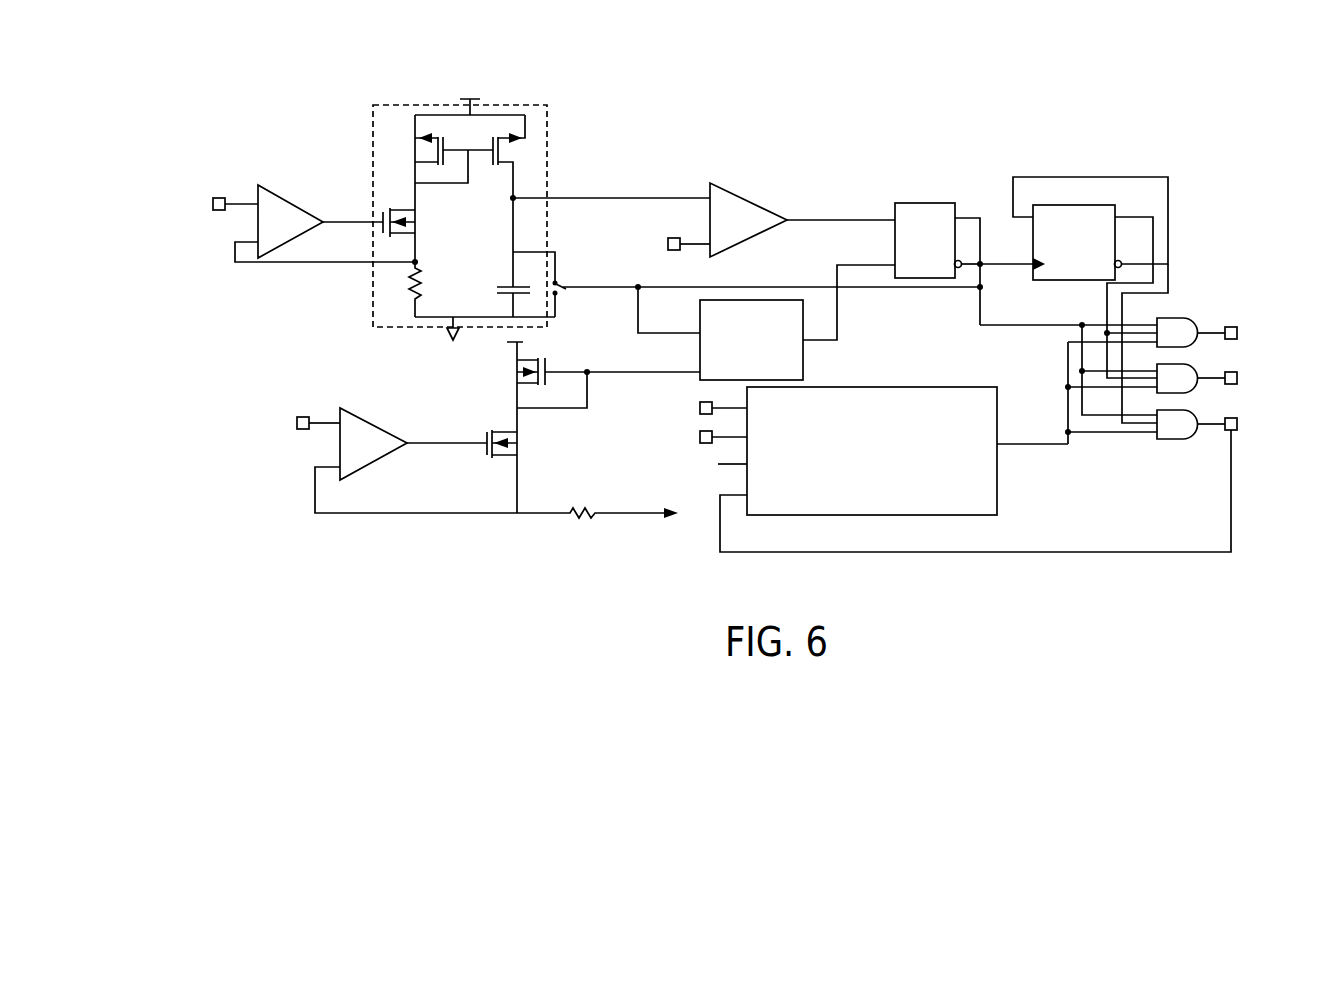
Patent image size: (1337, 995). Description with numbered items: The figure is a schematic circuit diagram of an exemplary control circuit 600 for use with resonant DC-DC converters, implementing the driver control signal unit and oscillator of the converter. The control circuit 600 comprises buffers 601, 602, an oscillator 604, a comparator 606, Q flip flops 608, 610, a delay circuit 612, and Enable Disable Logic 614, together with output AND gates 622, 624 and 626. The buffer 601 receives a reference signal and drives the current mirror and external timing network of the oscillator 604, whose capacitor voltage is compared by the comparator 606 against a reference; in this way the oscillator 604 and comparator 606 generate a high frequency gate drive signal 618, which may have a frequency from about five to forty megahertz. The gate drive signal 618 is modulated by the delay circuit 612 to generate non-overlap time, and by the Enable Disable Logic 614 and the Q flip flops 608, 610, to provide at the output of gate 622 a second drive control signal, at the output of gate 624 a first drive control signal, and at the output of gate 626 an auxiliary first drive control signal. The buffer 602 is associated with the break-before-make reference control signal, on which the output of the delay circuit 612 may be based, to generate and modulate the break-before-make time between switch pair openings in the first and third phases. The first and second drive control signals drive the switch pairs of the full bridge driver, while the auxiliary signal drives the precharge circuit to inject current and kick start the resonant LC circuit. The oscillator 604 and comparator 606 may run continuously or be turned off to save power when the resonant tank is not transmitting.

The control circuit 600 is at (1185, 95).
The buffer 601 is at (300, 203).
The buffer 602 is at (397, 433).
The oscillator 604 is at (521, 103).
The comparator 606 is at (743, 193).
The Q flip flop 608 is at (927, 202).
The Q flip flop 610 is at (1078, 202).
The delay circuit 612 is at (782, 298).
The Enable Disable Logic 614 is at (945, 386).
The gate drive signal 618 is at (833, 215).
The output AND gate 622 is at (1180, 318).
The output AND gate 624 is at (1160, 394).
The output AND gate 626 is at (1183, 440).